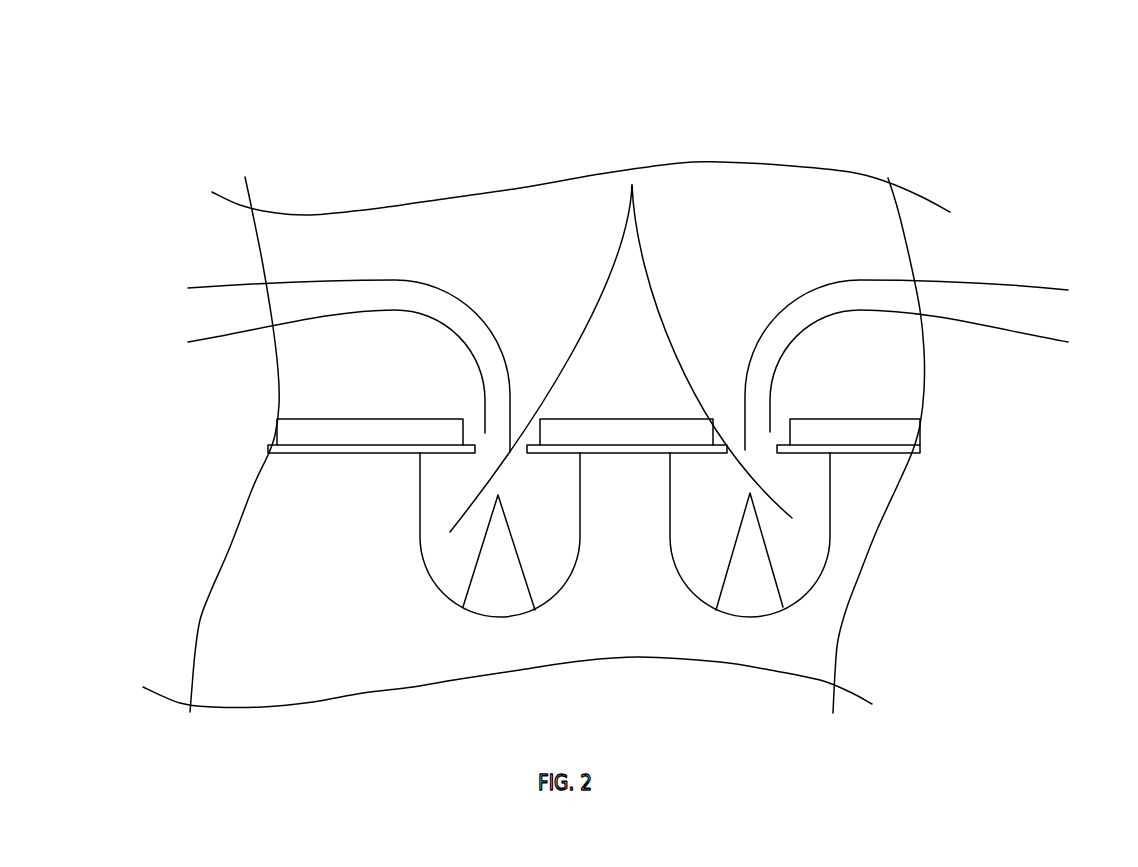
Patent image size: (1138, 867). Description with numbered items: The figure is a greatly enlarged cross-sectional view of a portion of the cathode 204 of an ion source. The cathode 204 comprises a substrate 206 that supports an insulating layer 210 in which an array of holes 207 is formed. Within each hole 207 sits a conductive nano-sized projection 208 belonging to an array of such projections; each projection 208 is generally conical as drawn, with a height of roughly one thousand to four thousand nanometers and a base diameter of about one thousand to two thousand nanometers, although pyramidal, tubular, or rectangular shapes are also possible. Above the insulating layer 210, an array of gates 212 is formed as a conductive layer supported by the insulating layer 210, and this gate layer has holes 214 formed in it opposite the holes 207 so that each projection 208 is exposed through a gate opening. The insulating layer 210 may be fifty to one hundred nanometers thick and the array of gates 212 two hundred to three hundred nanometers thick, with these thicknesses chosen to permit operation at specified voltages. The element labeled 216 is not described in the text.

The cathode 204 is at (204, 104).
The substrate 206 is at (200, 620).
The hole 207 is at (632, 185).
The conductive nano-sized projection 208 is at (747, 597).
The insulating layer 210 is at (268, 448).
The array of gates 212 is at (273, 430).
The hole 214 is at (631, 365).
The inner layer 216 is at (631, 371).